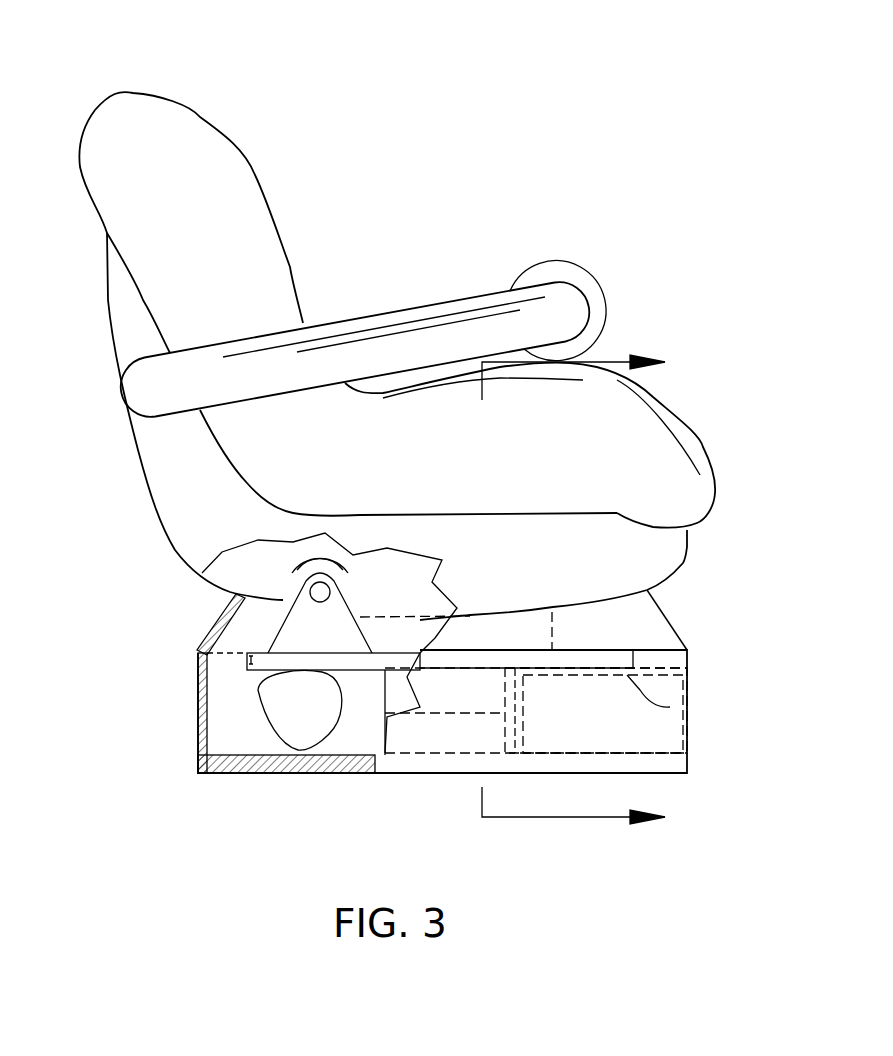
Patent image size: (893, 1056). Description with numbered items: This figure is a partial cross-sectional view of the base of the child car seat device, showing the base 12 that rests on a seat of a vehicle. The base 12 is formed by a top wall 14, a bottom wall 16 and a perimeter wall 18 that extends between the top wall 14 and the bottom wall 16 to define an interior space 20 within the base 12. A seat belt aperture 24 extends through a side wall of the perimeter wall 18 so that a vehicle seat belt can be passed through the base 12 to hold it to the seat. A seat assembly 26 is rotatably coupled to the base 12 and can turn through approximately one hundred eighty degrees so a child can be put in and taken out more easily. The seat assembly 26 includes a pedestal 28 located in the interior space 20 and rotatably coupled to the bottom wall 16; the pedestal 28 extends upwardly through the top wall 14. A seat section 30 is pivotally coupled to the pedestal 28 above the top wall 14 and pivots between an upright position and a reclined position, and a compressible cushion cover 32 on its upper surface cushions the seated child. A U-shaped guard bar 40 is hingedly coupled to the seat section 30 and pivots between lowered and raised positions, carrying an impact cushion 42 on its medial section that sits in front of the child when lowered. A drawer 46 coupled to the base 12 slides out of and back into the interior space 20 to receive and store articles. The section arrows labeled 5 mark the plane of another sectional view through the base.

The section line 5- 5 is at (599, 580).
The base 12 is at (197, 775).
The top wall 14 is at (212, 637).
The bottom wall 16 is at (347, 775).
The perimeter wall 18 is at (197, 723).
The interior space 20 is at (233, 642).
The seat belt aperture 24 is at (300, 728).
The seat assembly 26 is at (133, 93).
The pedestal 28 is at (247, 662).
The seat section 30 is at (170, 505).
The cushion cover 32 is at (210, 162).
The guard bar 40 is at (410, 318).
The impact cushion 42 is at (563, 268).
The drawer 46 is at (683, 703).